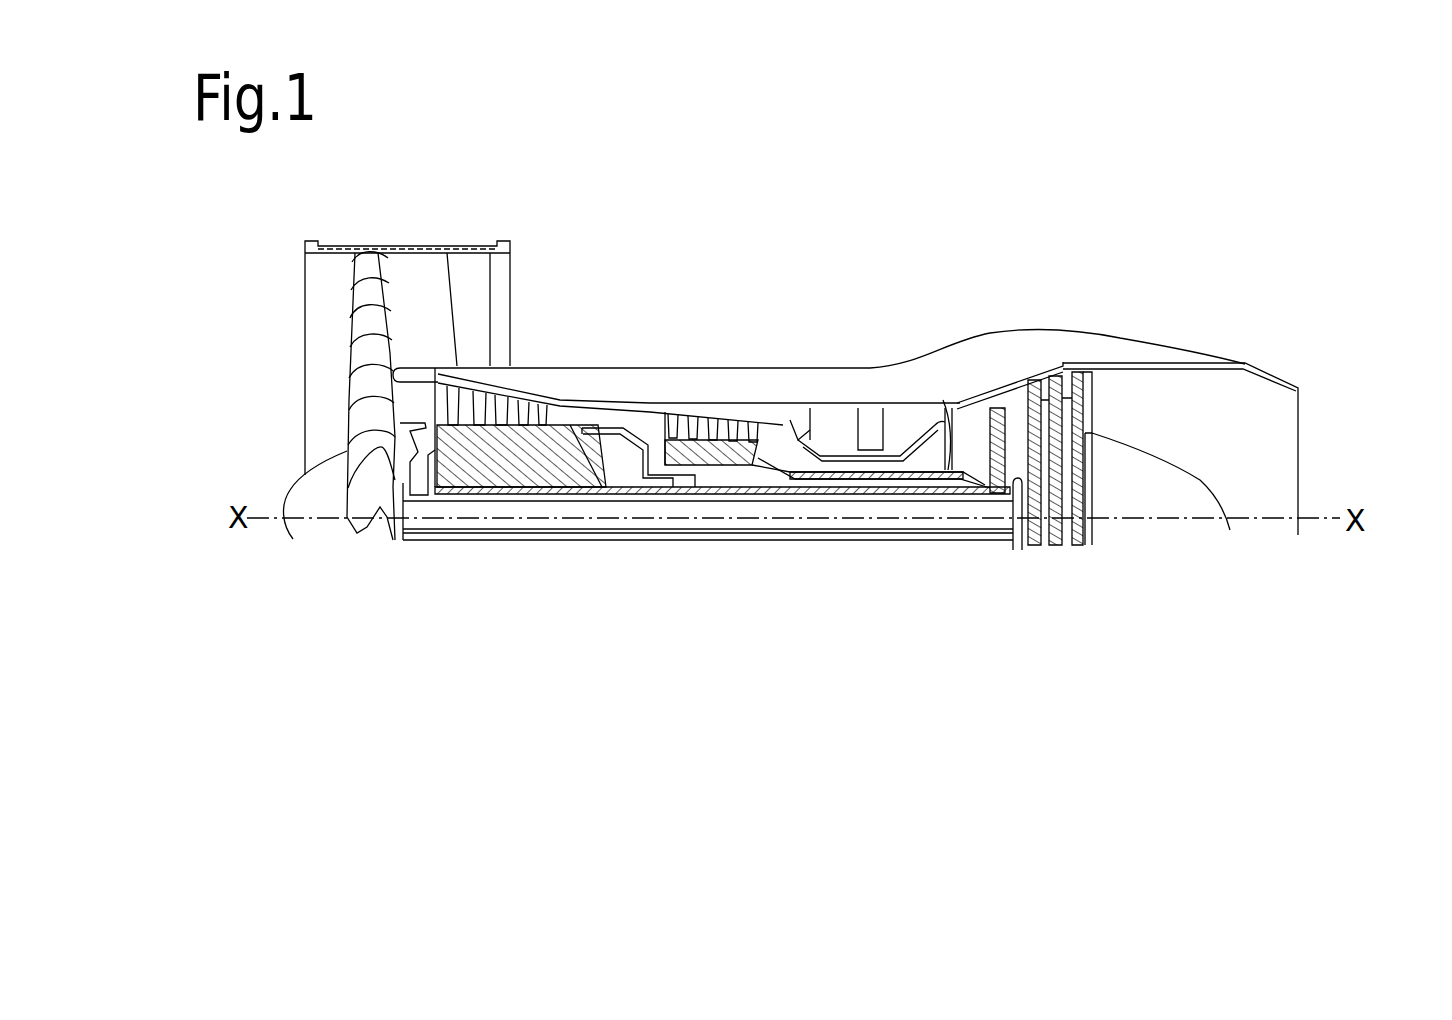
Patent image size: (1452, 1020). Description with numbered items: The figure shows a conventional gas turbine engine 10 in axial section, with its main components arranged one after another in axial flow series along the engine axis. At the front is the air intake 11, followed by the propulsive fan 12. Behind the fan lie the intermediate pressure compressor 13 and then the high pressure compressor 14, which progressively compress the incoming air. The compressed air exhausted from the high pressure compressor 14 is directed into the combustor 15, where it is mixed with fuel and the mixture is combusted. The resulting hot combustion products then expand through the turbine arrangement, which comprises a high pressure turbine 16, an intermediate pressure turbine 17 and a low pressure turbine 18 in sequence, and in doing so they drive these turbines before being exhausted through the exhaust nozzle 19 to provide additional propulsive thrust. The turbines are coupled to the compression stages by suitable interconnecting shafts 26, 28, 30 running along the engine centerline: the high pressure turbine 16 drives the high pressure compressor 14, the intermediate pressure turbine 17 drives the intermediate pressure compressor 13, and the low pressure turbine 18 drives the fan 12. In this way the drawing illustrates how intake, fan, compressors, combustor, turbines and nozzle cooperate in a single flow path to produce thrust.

The gas turbine engine 10 is at (704, 277).
The air intake 11 is at (275, 370).
The propulsive fan 12 is at (373, 290).
The intermediate pressure compressor 13 is at (513, 440).
The high pressure compressor 14 is at (715, 410).
The combustor 15 is at (870, 407).
The high pressure turbine 16 is at (955, 406).
The intermediate pressure turbine 17 is at (1000, 403).
The low pressure turbine 18 is at (1088, 400).
The exhaust nozzle 19 is at (1275, 476).
The interconnecting shaft 26 is at (853, 478).
The interconnecting shaft 28 is at (662, 490).
The interconnecting shaft 30 is at (927, 528).